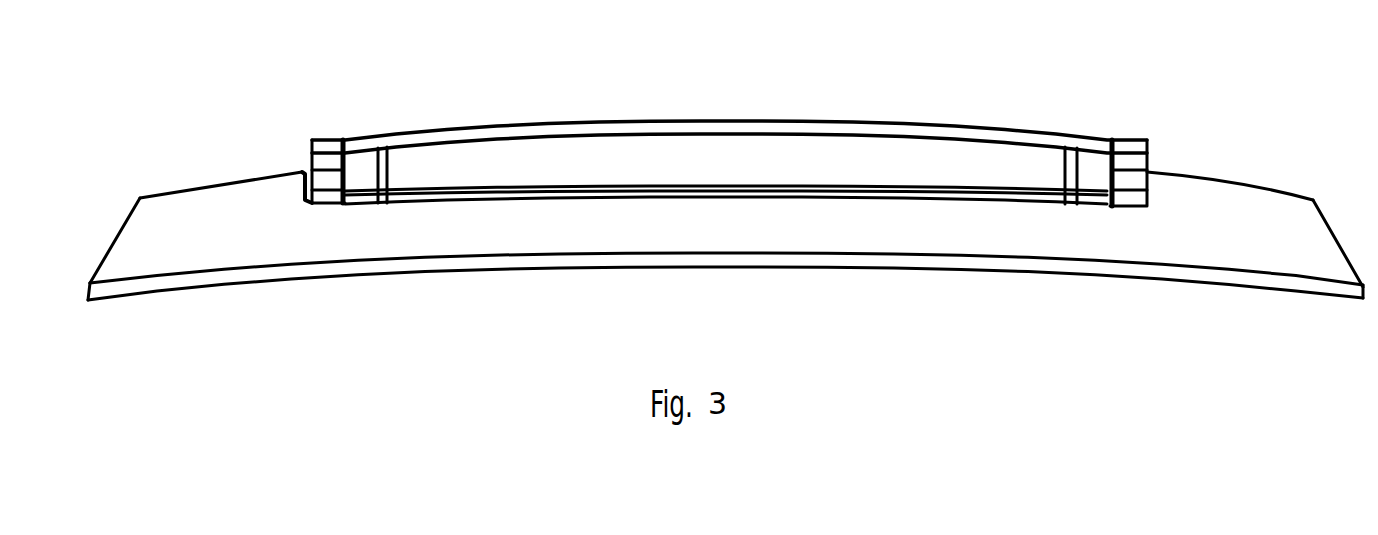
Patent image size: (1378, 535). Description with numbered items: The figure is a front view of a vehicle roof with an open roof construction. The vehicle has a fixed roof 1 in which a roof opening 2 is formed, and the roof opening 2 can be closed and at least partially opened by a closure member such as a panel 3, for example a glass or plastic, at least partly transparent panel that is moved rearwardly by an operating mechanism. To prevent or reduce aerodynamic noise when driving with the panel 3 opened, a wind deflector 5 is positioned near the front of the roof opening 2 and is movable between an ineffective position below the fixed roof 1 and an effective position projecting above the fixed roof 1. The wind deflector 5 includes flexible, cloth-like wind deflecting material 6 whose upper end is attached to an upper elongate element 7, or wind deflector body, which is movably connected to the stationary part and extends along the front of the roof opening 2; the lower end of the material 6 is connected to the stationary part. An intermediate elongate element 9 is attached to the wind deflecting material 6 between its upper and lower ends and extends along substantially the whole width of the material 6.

The fixed roof 1 is at (1243, 223).
The roof opening 2 is at (1140, 167).
The panel 3 is at (337, 143).
The wind deflector 5 is at (787, 120).
The flexible wind deflecting material 6 is at (500, 167).
The upper elongate element 7 is at (568, 130).
The intermediate elongate element 9 is at (650, 188).